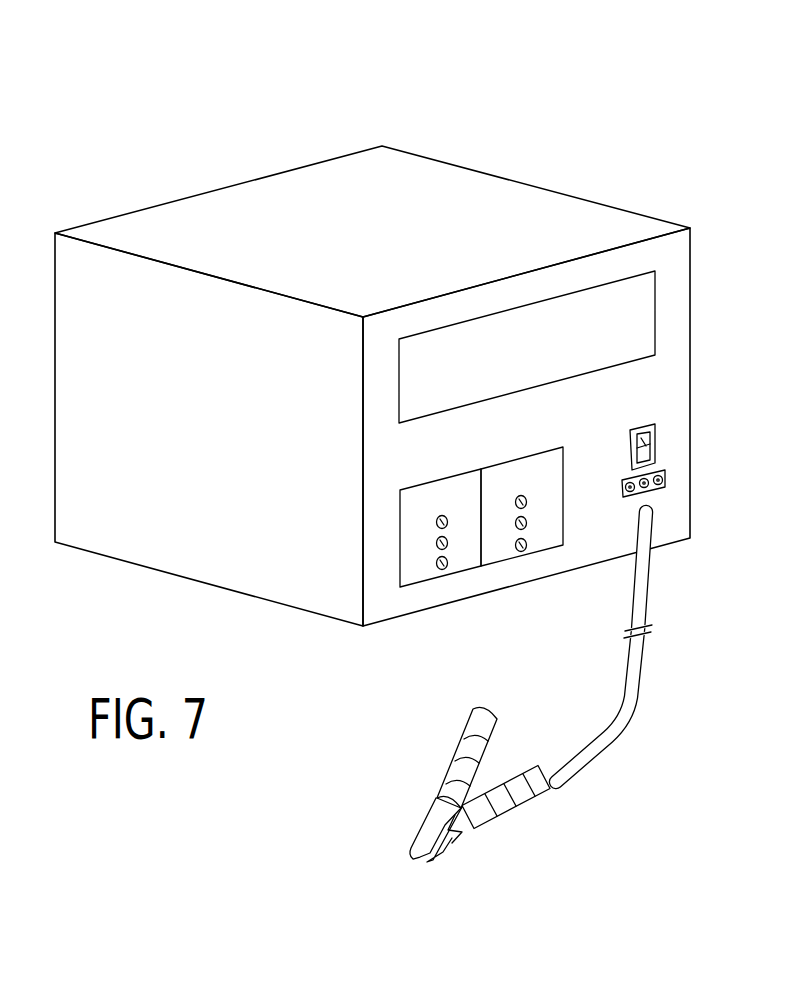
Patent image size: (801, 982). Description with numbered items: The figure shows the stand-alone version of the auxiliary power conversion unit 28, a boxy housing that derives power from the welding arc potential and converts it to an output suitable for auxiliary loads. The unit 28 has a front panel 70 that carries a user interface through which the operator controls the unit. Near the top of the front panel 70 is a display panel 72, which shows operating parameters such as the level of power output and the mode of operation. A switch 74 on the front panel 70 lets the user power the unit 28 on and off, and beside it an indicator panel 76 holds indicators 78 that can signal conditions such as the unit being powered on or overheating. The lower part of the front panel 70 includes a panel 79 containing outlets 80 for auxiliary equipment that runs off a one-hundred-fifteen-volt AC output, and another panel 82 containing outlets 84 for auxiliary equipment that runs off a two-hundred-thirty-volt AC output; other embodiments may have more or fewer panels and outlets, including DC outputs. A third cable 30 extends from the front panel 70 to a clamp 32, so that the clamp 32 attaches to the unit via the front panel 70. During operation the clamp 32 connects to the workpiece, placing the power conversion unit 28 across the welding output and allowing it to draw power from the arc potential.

The power conversion unit 28 is at (364, 129).
The front panel 70 is at (673, 258).
The display panel 72 is at (640, 313).
The switch 74 is at (653, 437).
The indicator panel 76 is at (630, 479).
The indicators 78 is at (633, 490).
The panel 79 is at (400, 537).
The outlets 80 is at (447, 524).
The panel 82 is at (550, 507).
The outlets 84 is at (526, 505).
The third cable 30 is at (648, 610).
The clamp 32 is at (525, 805).